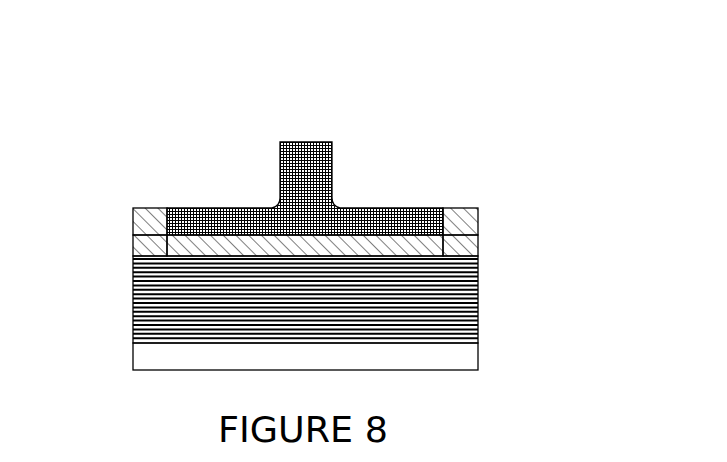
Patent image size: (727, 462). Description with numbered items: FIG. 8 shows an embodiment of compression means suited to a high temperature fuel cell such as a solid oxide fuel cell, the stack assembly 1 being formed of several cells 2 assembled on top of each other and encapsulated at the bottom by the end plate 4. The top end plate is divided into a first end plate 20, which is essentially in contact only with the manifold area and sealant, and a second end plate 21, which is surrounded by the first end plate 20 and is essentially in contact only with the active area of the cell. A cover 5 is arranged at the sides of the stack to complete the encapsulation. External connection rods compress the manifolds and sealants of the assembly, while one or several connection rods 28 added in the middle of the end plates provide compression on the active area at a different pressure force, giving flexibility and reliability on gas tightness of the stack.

The stack assembly 1 is at (115, 73).
The cells 2 is at (482, 308).
The bottom end plate 4 is at (463, 357).
The cover 5 is at (460, 218).
The first end plate 20 is at (463, 245).
The second end plate 21 is at (225, 245).
The connection rods 28 is at (322, 142).